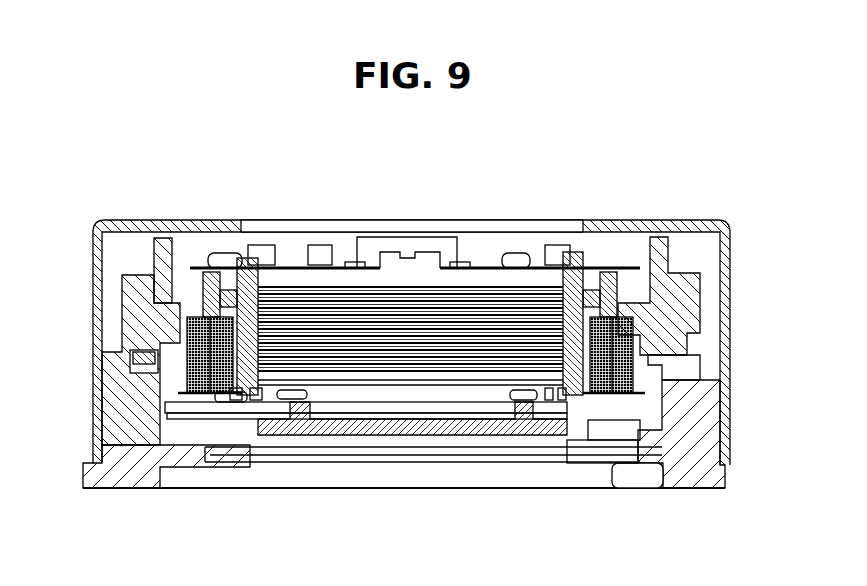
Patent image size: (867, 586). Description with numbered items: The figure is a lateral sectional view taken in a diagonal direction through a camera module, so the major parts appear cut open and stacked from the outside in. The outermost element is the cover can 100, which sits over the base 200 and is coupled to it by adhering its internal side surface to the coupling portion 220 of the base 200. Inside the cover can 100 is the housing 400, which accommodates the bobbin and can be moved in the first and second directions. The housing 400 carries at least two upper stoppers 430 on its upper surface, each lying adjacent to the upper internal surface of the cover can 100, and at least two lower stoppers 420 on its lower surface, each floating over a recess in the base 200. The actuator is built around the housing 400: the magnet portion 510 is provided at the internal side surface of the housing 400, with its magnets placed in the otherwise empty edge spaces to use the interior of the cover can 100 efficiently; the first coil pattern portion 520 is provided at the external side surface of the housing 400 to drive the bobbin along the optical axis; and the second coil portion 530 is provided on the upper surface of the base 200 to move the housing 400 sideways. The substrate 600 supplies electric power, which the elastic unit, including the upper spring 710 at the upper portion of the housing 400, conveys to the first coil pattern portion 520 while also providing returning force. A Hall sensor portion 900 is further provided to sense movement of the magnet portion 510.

The cover can 100 is at (718, 222).
The base 200 is at (713, 478).
The coupling portion 220 is at (128, 402).
The housing 400 is at (687, 303).
The lower stopper 420 is at (140, 364).
The upper stopper 430 is at (165, 238).
The magnet portion 510 is at (680, 375).
The first coil pattern portion 520 is at (580, 347).
The second coil portion 530 is at (185, 405).
The substrate 600 is at (223, 415).
The upper spring 710 is at (622, 262).
The Hall sensor portion 900 is at (608, 428).